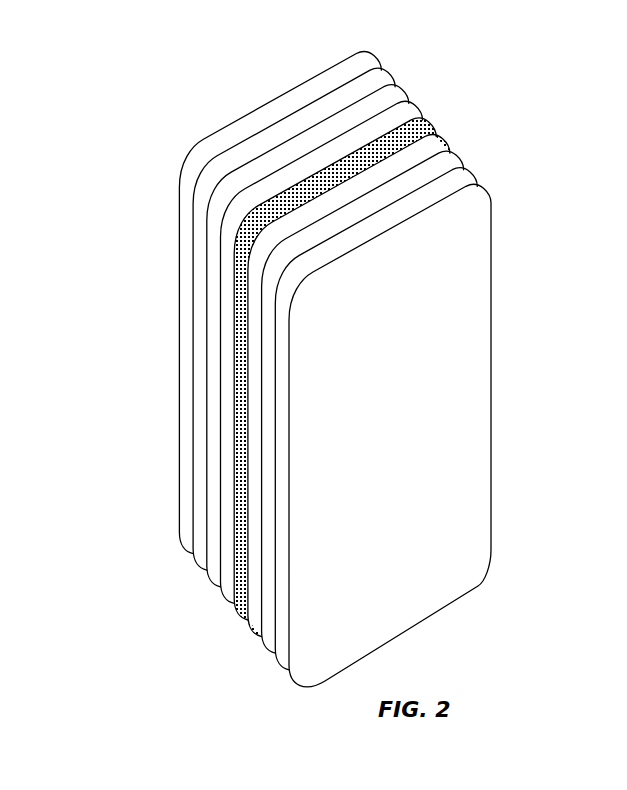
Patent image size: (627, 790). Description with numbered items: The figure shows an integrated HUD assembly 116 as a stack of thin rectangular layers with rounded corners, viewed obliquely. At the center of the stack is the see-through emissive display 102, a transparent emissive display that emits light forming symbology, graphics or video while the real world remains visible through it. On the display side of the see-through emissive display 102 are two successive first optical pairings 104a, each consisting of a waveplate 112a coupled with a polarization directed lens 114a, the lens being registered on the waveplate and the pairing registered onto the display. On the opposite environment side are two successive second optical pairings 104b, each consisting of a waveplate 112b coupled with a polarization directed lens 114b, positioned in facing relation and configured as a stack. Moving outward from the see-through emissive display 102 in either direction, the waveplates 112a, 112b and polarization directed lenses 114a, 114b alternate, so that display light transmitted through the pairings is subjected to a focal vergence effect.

The see-through emissive display 102 is at (433, 144).
The first optical pairing 104a is at (235, 658).
The second optical pairing 104b is at (165, 575).
The waveplate 112a is at (453, 158).
The waveplate 112b is at (386, 89).
The polarization directed lens 114a is at (463, 183).
The polarization directed lens 114b is at (360, 49).
The integrated HUD assembly 116 is at (145, 116).